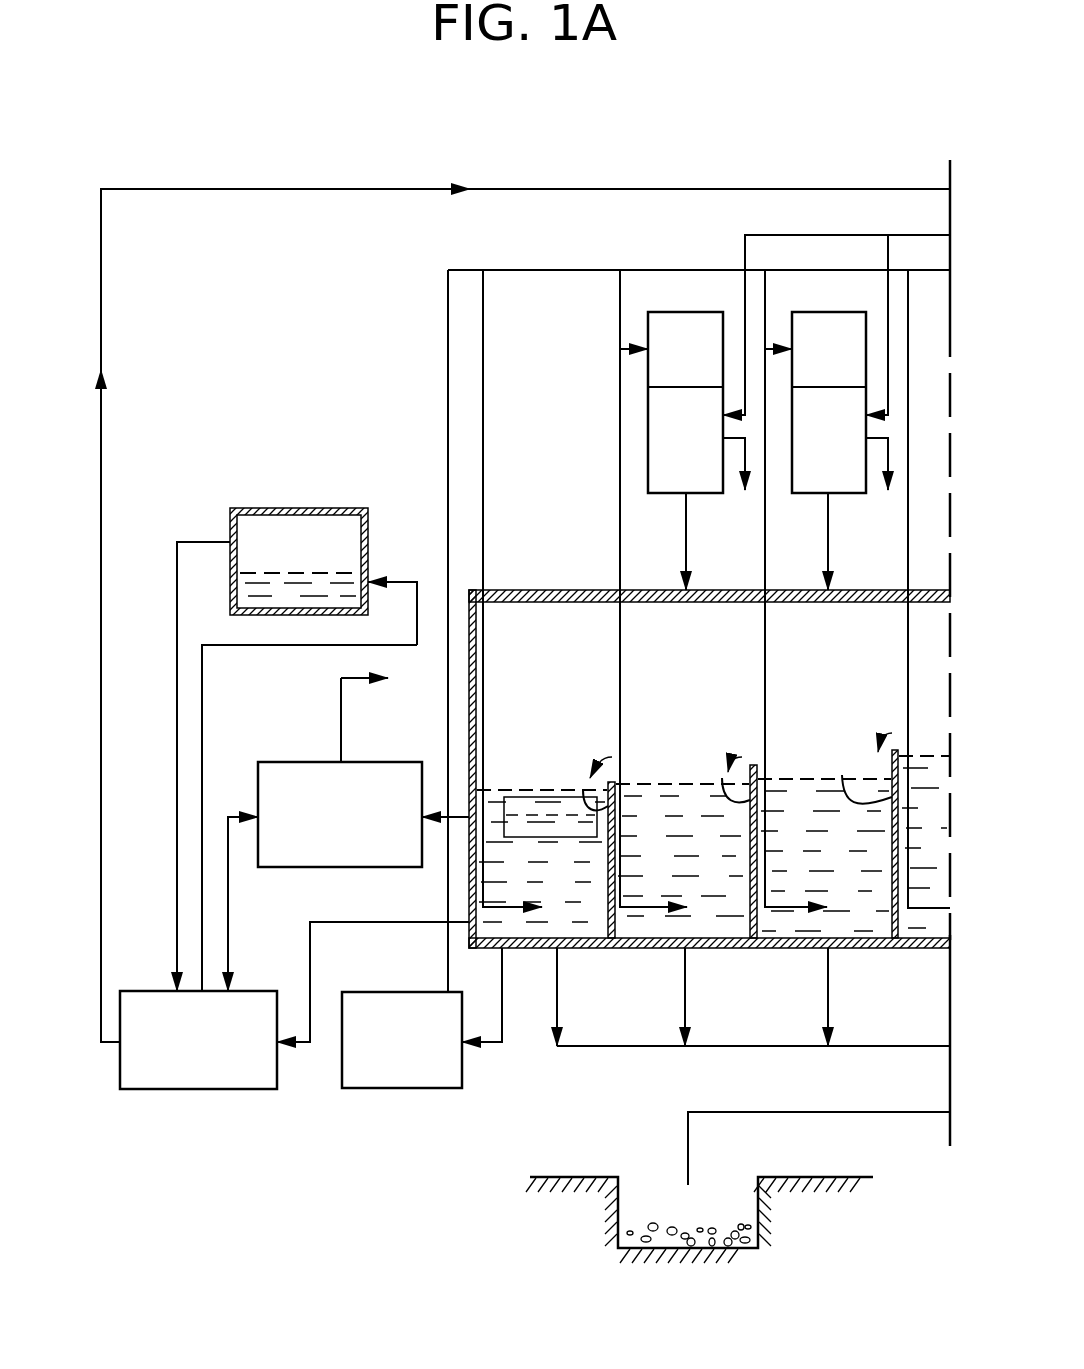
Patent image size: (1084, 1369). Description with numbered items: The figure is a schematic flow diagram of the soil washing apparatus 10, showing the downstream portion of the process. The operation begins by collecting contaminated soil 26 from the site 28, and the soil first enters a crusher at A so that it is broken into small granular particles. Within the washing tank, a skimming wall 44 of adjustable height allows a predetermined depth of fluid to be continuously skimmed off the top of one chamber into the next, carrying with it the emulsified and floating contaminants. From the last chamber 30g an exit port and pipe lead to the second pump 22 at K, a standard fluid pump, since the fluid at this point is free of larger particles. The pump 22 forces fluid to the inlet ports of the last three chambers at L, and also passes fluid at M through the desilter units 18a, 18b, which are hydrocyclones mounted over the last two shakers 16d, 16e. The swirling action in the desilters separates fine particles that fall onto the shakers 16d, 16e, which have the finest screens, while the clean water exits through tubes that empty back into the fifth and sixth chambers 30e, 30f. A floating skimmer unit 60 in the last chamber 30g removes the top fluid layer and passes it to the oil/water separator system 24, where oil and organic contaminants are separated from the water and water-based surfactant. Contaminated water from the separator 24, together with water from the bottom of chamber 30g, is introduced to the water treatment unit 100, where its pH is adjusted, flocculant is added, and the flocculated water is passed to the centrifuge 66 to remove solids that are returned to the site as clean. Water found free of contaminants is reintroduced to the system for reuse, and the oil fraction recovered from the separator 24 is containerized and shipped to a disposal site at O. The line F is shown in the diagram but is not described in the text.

The apparatus 10 is at (309, 180).
The desilter unit 18a is at (827, 338).
The desilter unit 18b is at (700, 340).
The shaker 16d is at (805, 480).
The shaker 16e is at (665, 475).
The last chamber 30g is at (567, 883).
The sixth chamber 30f is at (663, 851).
The fifth chamber 30e is at (806, 853).
The skimming wall 44 is at (583, 790).
The floating skimmer unit 60 is at (572, 800).
The centrifuge 66 is at (258, 508).
The oil/water separator system 24 is at (300, 770).
The water treatment unit 100 is at (155, 1089).
The second pump 22 is at (392, 1088).
The contaminated soil 26 is at (652, 1226).
The site 28 is at (785, 1177).
The crusher entry point A is at (797, 1112).
The fluid line F is at (747, 235).
The chamber inlet point L is at (483, 406).
The desilter feed point M is at (629, 347).
The second pump point K is at (503, 1012).
The disposal shipping point O is at (341, 694).